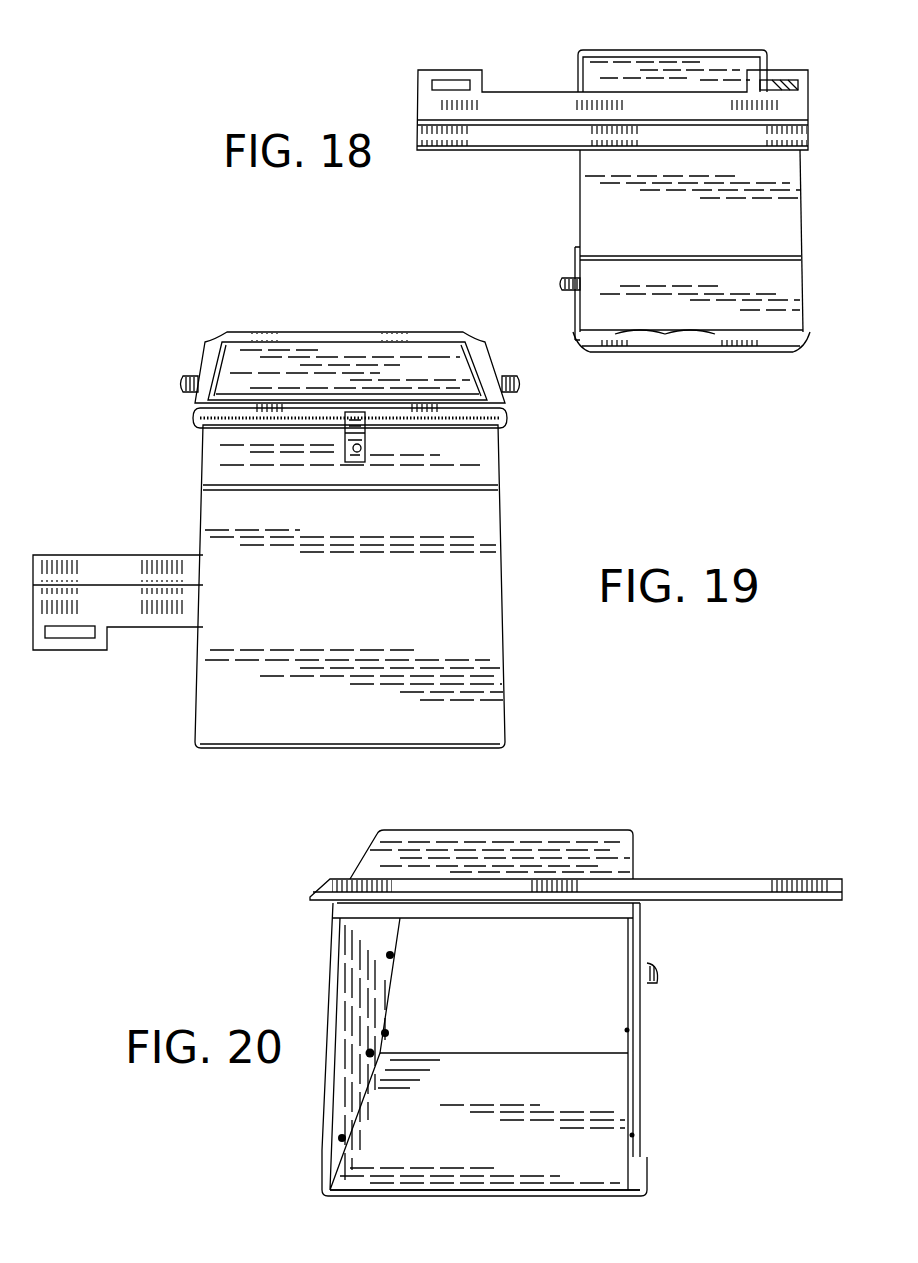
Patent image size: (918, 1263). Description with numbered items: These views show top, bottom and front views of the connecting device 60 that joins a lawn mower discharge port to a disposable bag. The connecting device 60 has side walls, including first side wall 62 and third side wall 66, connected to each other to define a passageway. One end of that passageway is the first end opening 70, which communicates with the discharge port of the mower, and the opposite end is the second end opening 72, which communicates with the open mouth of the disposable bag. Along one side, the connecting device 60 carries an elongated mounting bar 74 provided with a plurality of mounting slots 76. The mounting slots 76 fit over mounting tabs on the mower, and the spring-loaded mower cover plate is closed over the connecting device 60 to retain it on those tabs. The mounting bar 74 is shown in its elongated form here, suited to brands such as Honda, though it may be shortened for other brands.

In FIG. 18, the connecting device 60 is at (505, 238).
In FIG. 19, the connecting device 60 is at (160, 457).
In FIG. 20, the connecting device 60 is at (712, 1045).
In FIG. 18, the first side wall 62 is at (800, 220).
In FIG. 19, the third side wall 66 is at (463, 618).
In FIG. 20, the third side wall 66 is at (490, 1013).
In FIG. 18, the first end opening 70 is at (727, 60).
In FIG. 19, the first end opening 70 is at (292, 752).
In FIG. 20, the first end opening 70 is at (606, 1178).
In FIG. 18, the second end opening 72 is at (718, 362).
In FIG. 19, the second end opening 72 is at (290, 362).
In FIG. 18, the mounting bar 74 is at (477, 137).
In FIG. 19, the mounting bar 74 is at (118, 602).
In FIG. 20, the mounting bar 74 is at (707, 885).
In FIG. 18, the mounting slots 76 is at (450, 86).